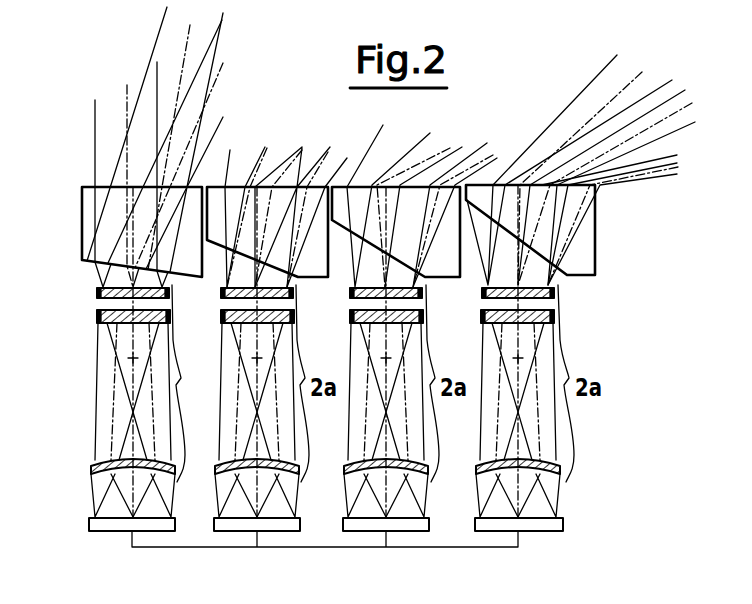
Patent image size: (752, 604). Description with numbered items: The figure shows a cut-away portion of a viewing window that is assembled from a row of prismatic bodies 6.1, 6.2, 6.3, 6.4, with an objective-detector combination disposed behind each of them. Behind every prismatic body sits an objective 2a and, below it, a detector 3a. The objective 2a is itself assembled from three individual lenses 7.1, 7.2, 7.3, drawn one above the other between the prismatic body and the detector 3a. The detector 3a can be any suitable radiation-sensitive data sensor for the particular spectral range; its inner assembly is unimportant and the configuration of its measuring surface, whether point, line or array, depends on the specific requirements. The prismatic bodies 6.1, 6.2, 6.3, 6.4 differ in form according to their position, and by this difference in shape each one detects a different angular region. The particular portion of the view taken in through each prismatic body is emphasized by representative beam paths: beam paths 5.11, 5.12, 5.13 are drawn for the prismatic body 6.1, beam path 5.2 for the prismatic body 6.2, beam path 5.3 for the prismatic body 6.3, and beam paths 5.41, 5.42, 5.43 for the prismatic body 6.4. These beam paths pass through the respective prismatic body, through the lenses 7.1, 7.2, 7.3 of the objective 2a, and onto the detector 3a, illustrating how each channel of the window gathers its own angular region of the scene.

The representative beam path 5.41 is at (112, 107).
The representative beam path 5.42 is at (167, 40).
The representative beam path 5.43 is at (208, 117).
The representative beam path 5.3 is at (362, 150).
The representative beam path 5.2 is at (500, 147).
The representative beam path 5.11 is at (607, 87).
The representative beam path 5.12 is at (688, 100).
The representative beam path 5.13 is at (660, 172).
The prismatic body 6.1 is at (578, 263).
The prismatic body 6.2 is at (437, 265).
The prismatic body 6.3 is at (310, 265).
The prismatic body 6.4 is at (185, 267).
The individual lens 7.1 is at (97, 295).
The individual lens 7.2 is at (97, 318).
The individual lens 7.3 is at (95, 470).
The objective 2a is at (149, 352).
The detector 3a is at (547, 523).